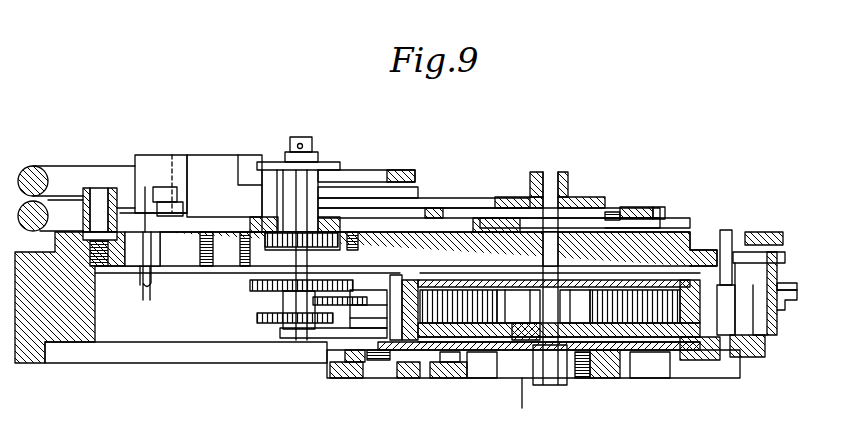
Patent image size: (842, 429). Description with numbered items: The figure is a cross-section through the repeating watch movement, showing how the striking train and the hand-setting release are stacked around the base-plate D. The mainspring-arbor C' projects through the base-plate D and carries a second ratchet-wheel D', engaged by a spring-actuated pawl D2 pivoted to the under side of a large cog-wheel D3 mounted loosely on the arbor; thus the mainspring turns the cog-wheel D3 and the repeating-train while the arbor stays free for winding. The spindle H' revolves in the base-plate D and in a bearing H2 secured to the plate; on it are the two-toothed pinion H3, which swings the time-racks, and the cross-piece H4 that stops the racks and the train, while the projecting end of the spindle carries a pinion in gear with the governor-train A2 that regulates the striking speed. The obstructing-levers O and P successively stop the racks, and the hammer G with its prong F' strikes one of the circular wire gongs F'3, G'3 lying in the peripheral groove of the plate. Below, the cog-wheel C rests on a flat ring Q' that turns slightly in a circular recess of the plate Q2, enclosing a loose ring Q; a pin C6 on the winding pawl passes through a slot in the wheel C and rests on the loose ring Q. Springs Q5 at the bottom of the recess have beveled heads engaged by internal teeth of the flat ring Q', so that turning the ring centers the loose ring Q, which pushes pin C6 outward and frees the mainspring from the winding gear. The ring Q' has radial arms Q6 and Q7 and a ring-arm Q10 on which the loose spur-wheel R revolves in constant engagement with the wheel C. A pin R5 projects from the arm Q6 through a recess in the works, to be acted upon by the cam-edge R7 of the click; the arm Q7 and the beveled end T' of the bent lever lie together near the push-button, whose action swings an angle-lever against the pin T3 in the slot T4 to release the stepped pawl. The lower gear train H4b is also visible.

The governor-train A2 is at (366, 297).
The upper feed roller F'3 is at (76, 181).
The lower feed roller G'3 is at (50, 215).
The hammer G is at (161, 183).
The prong of hammer F' is at (224, 186).
The spindle H' is at (279, 252).
The bearing H2 is at (270, 218).
The two-toothed pinion H3 is at (278, 170).
The cross-piece H4 is at (328, 165).
The lower gear train H4b is at (250, 282).
The obstructing-lever P is at (362, 180).
The obstructing-lever O is at (398, 170).
The second ratchet-wheel D' is at (489, 194).
The spring-actuated pawl D2 is at (482, 215).
The large cog-wheel D3 is at (640, 205).
The base-plate D is at (647, 216).
The beveled end of bent lever T' is at (475, 256).
The mainspring-arbor C' is at (550, 278).
The loose ring Q is at (591, 344).
The flat ring Q' is at (558, 353).
The radial arm Q6 is at (706, 350).
The ring-arm Q10 is at (375, 352).
The loose spur-wheel R is at (533, 374).
The spring Q5 is at (410, 378).
The pin C6 is at (465, 378).
The plate Q2 is at (501, 388).
The cog-wheel C is at (622, 379).
The pin R5 is at (726, 230).
The cam-edge R7 is at (765, 221).
The radial arm Q7 is at (780, 295).
The pin T3 is at (157, 291).
The slot T4 is at (138, 280).